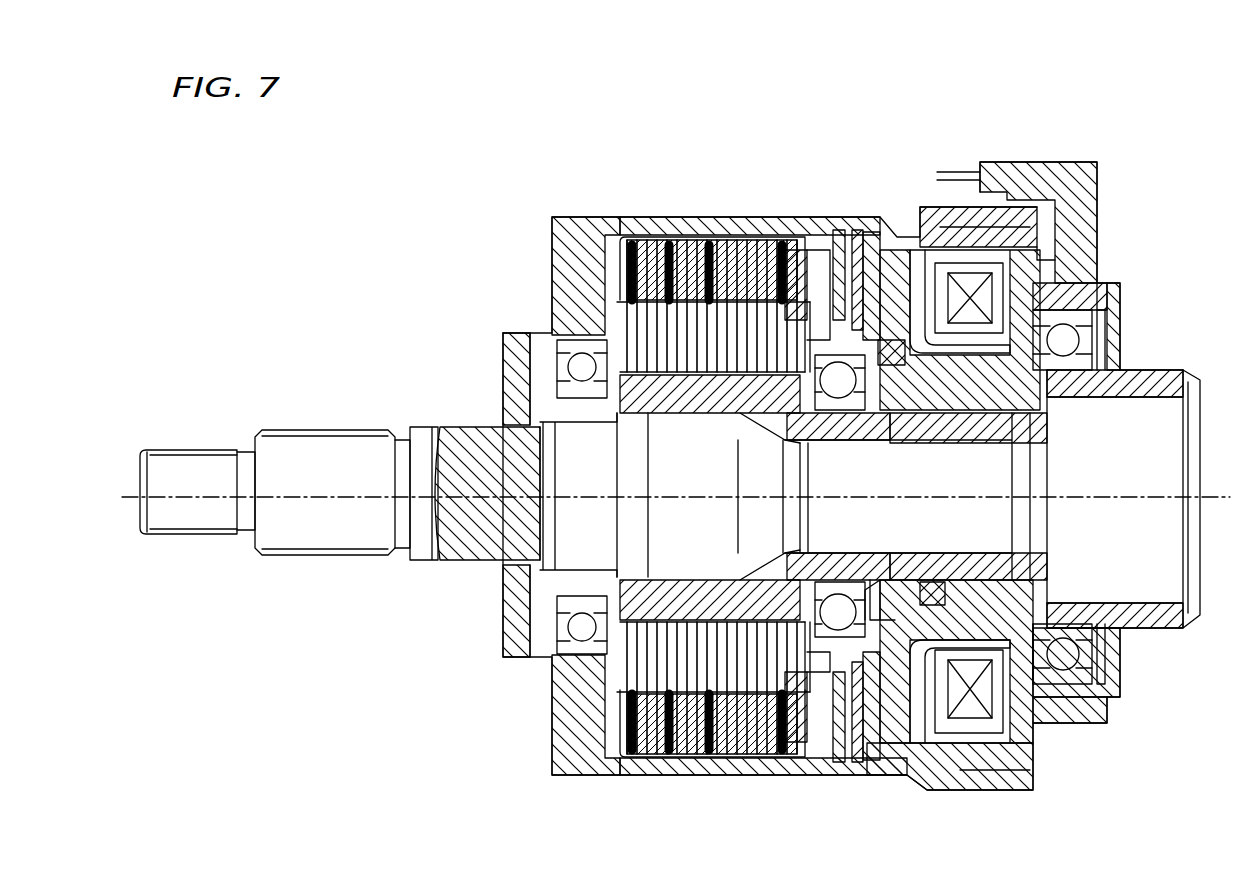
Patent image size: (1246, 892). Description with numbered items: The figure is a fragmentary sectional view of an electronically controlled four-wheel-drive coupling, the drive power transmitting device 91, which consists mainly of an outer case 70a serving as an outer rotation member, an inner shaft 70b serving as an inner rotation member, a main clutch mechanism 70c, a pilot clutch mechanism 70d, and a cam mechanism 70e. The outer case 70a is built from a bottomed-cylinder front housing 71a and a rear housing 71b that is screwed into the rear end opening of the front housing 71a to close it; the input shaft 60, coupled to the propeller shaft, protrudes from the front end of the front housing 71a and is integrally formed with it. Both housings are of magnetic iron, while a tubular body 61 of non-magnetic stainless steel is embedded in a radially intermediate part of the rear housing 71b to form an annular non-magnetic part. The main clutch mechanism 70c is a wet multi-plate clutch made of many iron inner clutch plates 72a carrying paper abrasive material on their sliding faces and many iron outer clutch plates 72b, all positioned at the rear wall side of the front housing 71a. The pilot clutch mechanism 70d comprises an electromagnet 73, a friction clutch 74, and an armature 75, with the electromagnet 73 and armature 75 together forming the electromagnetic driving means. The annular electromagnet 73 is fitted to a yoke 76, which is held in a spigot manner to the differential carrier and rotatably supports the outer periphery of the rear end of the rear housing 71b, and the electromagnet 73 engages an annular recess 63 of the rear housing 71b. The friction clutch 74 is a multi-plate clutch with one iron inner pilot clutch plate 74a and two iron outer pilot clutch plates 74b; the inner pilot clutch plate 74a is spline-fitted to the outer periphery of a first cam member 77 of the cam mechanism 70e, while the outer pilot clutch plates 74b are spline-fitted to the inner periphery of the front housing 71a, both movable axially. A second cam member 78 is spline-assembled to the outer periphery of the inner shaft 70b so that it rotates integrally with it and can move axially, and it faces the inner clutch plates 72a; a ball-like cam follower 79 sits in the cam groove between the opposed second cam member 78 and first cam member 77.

The drive power transmitting device 91 is at (1172, 145).
The input shaft 60 is at (191, 458).
The tubular body 61 is at (917, 296).
The annular recess 63 is at (951, 346).
The outer case 70a is at (625, 212).
The inner shaft 70b is at (708, 380).
The main clutch mechanism 70c is at (752, 212).
The pilot clutch mechanism 70d is at (920, 270).
The cam mechanism 70e is at (778, 440).
The front housing 71a is at (562, 217).
The rear housing 71b is at (1012, 192).
The inner clutch plates 72a is at (728, 347).
The outer clutch plates 72b is at (658, 248).
The electromagnet 73 is at (1058, 394).
The friction clutch 74 is at (867, 222).
The inner pilot clutch plate 74a is at (891, 356).
The outer pilot clutch plates 74b is at (857, 222).
The armature 75 is at (838, 232).
The yoke 76 is at (1110, 700).
The first cam member 77 is at (890, 440).
The second cam member 78 is at (795, 250).
The cam follower 79 is at (838, 400).